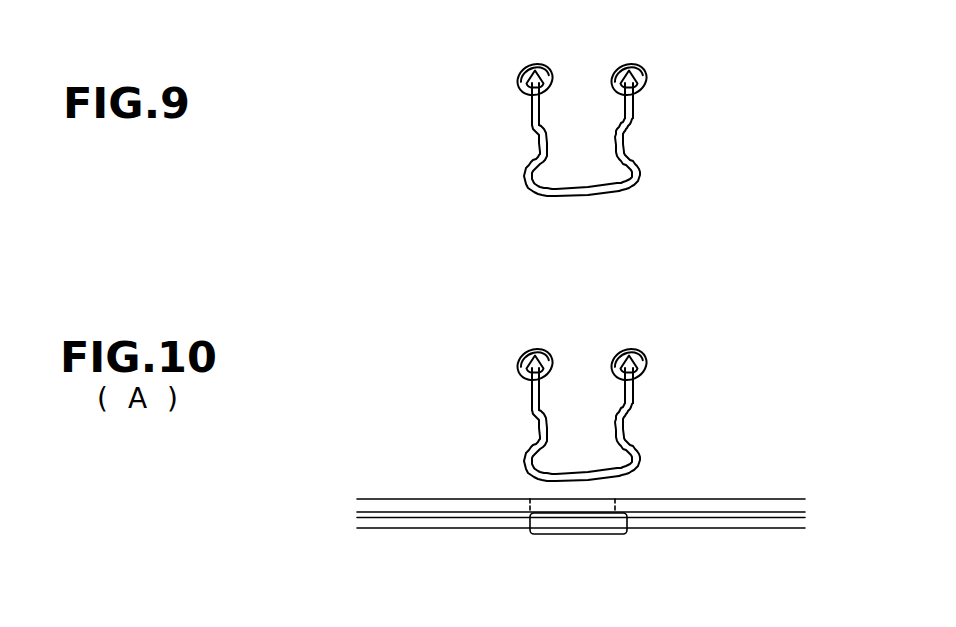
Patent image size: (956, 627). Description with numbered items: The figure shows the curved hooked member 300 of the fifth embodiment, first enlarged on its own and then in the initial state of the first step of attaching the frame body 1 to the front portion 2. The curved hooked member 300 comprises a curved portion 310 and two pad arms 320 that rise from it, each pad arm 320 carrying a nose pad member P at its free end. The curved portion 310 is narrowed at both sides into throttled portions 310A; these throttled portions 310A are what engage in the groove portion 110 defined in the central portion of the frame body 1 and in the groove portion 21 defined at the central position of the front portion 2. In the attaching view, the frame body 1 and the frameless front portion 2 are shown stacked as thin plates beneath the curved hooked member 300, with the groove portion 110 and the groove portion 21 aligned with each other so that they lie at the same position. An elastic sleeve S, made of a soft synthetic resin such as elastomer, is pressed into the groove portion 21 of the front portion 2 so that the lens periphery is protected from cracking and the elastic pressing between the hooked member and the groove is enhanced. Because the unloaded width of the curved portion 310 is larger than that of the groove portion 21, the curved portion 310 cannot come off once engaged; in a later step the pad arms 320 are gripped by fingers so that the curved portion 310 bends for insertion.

In FIG. 9, the curved hooked member 300 is at (493, 85).
In FIG. 10A, the curved hooked member 300 is at (600, 388).
In FIG. 9, the nose pad member P is at (632, 67).
In FIG. 10A, the nose pad member P is at (593, 338).
In FIG. 9, the pad arm 320 is at (641, 100).
In FIG. 10A, the pad arm 320 is at (643, 375).
In FIG. 9, the throttled portion 310A is at (634, 140).
In FIG. 10A, the throttled portion 310A is at (694, 431).
In FIG. 9, the curved portion 310 is at (547, 200).
In FIG. 10A, the curved portion 310 is at (529, 447).
In FIG. 10A, the frame body 1 is at (737, 499).
In FIG. 10A, the front portion 2 is at (737, 528).
In FIG. 10A, the groove portion 110 is at (615, 499).
In FIG. 10A, the groove portion 21 is at (530, 536).
In FIG. 10A, the elastic sleeve S is at (603, 534).